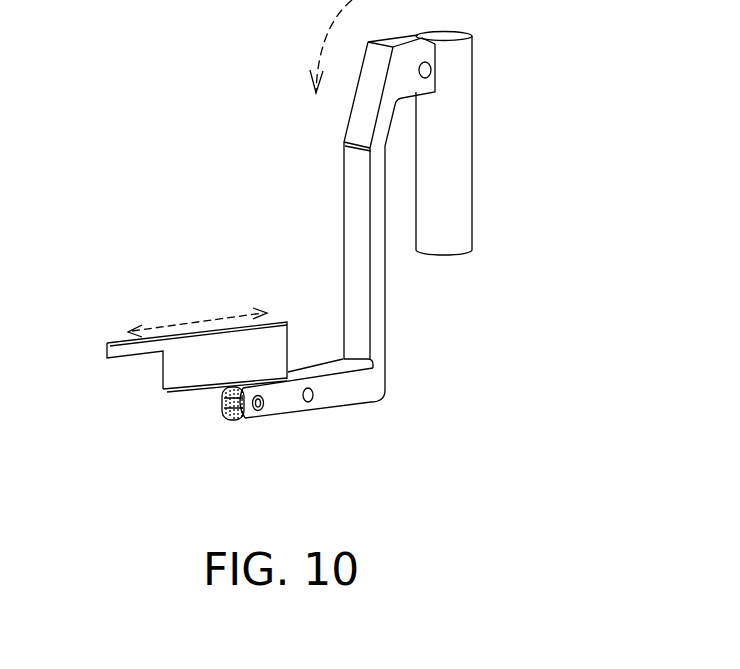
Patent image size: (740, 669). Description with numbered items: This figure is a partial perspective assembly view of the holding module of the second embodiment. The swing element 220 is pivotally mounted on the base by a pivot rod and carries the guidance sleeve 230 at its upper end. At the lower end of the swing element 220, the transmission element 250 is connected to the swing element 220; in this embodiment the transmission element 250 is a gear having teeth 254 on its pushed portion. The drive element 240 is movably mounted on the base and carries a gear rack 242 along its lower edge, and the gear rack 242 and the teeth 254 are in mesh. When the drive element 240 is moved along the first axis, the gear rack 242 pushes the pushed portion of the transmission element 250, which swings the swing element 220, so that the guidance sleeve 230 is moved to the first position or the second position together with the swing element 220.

The swing element 220 is at (377, 298).
The guidance sleeve 230 is at (452, 162).
The drive element 240 is at (187, 363).
The gear rack 242 is at (207, 392).
The transmission element 250 is at (267, 394).
The teeth 254 is at (232, 413).